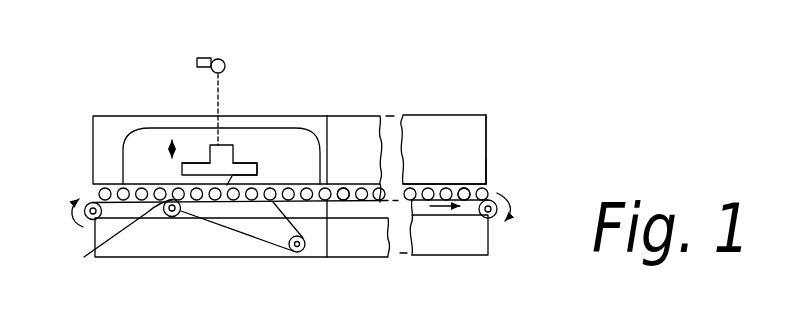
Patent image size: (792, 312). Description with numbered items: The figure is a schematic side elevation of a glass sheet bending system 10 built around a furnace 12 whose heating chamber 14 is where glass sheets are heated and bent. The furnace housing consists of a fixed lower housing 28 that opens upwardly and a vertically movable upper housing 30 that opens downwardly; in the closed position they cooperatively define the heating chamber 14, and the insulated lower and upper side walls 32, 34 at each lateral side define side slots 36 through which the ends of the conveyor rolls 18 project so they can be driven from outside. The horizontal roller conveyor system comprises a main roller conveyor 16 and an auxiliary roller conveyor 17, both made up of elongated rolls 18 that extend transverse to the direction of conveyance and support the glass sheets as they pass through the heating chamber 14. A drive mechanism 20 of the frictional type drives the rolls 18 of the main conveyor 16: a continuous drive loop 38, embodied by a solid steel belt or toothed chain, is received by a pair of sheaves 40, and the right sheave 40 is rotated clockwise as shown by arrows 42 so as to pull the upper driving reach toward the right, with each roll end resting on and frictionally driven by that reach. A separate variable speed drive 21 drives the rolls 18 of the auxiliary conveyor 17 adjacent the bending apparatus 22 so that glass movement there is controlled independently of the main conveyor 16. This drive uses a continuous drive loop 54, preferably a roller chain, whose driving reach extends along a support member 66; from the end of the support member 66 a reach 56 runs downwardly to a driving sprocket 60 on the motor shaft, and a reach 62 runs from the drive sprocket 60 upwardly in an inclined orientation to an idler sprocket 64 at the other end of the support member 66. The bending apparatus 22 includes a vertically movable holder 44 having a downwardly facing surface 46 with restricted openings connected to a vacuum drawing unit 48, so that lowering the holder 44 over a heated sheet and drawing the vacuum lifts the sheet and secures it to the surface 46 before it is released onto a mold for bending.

The glass sheet bending system 10 is at (309, 97).
The furnace 12 is at (442, 112).
The heating chamber 14 is at (248, 133).
The main roller conveyor 16 is at (464, 180).
The auxiliary roller conveyor 17 is at (236, 169).
The rolls 18 is at (120, 189).
The drive mechanism 20 is at (505, 188).
The variable speed drive 21 is at (254, 245).
The bending apparatus 22 is at (209, 144).
The lower housing 28 is at (378, 250).
The upper housing 30 is at (487, 126).
The lower side wall 32 is at (489, 222).
The upper side wall 34 is at (485, 176).
The side slots 36 is at (346, 187).
The drive loops 38 is at (461, 188).
The sheaves 40 is at (87, 219).
The arrows 42 is at (72, 212).
The holder 44 is at (200, 163).
The downwardly facing surface 46 is at (173, 167).
The vacuum drawing unit 48 is at (224, 64).
The drive loops 54 is at (218, 224).
The reach 56 is at (290, 218).
The driving sprocket 60 is at (299, 253).
The reach 62 is at (245, 233).
The idler sprocket 64 is at (84, 257).
The support member 66 is at (178, 216).